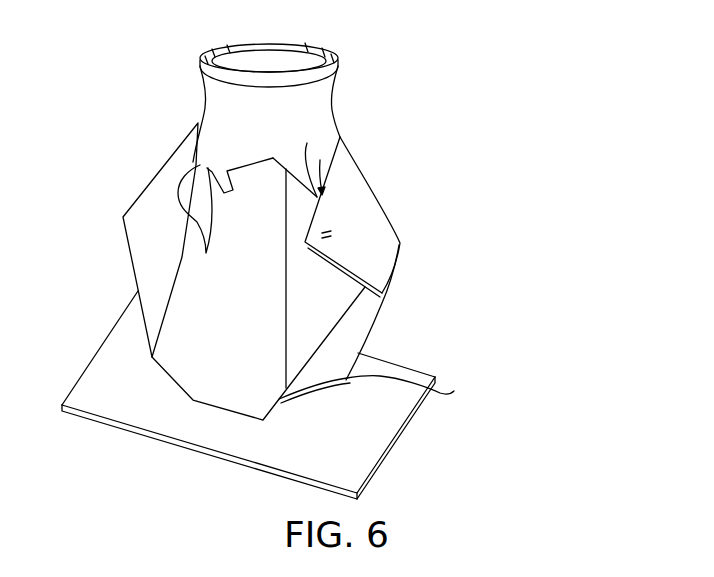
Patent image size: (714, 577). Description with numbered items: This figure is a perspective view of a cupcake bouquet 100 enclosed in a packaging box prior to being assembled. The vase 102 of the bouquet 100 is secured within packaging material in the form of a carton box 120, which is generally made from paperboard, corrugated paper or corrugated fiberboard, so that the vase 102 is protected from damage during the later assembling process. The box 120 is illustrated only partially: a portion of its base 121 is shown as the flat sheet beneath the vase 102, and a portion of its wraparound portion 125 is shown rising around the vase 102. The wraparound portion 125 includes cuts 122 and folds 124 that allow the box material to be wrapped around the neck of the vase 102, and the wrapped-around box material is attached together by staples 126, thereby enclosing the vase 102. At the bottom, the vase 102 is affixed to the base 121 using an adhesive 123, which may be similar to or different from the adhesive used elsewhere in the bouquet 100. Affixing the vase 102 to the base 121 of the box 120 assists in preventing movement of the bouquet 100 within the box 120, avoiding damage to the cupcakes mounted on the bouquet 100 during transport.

The cupcake bouquet 100 is at (474, 52).
The vase 102 is at (338, 87).
The carton box 120 is at (158, 173).
The base 121 is at (405, 428).
The cuts 122 is at (225, 221).
The adhesive 123 is at (420, 392).
The folds 124 is at (286, 306).
The wraparound portion 125 is at (394, 230).
The staples 126 is at (321, 233).